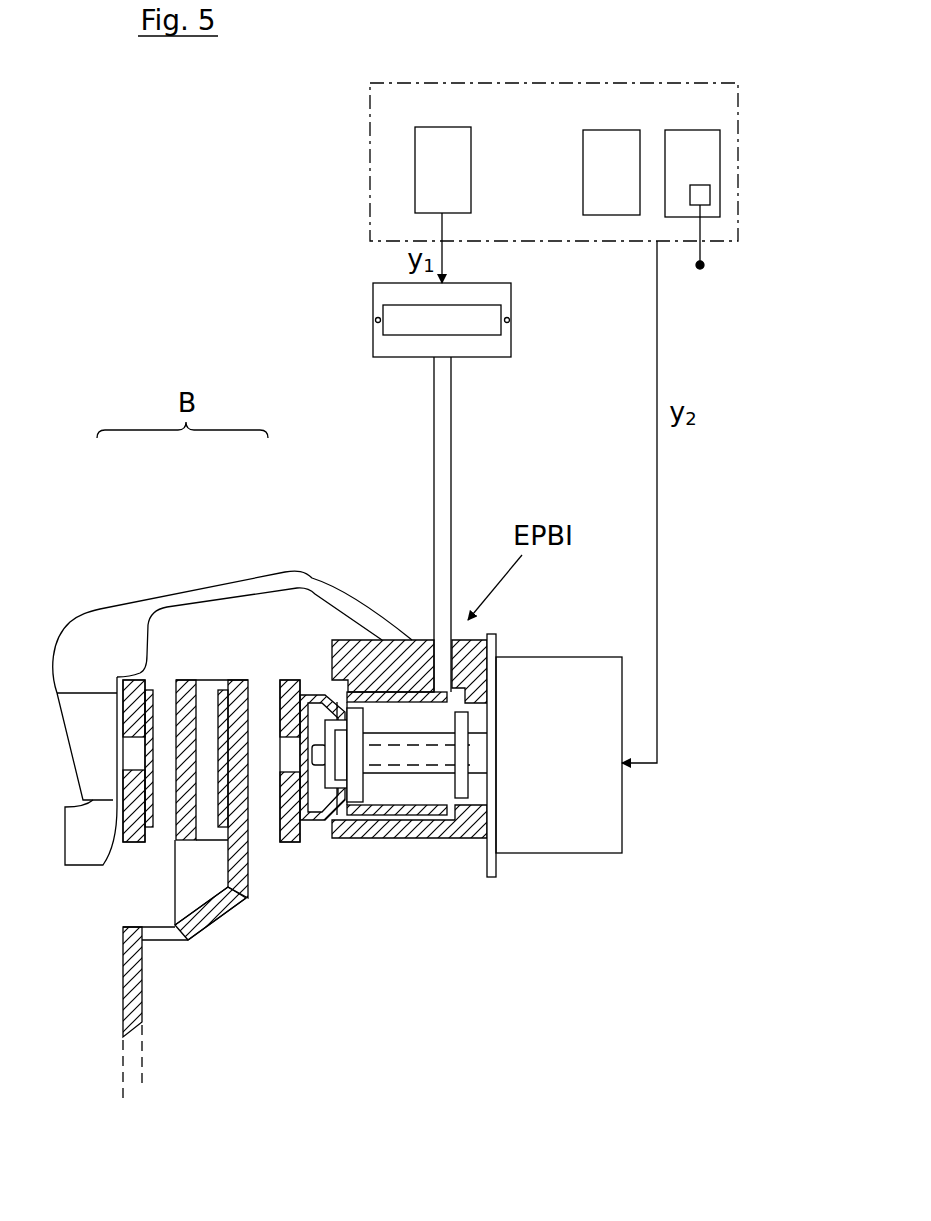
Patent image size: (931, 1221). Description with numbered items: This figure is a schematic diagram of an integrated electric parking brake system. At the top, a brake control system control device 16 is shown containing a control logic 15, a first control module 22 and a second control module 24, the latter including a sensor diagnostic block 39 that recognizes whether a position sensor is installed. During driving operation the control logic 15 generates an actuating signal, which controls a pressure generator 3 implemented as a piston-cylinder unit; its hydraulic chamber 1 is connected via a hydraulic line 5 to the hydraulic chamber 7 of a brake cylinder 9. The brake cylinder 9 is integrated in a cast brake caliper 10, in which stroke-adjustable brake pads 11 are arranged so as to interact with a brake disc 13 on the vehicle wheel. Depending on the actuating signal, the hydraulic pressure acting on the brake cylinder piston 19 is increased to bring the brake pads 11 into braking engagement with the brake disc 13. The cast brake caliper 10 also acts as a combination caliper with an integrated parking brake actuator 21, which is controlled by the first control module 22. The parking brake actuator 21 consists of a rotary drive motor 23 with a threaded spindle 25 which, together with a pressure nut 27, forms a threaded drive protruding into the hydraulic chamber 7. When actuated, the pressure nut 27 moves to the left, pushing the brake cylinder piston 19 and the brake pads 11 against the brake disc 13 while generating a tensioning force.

The hydraulic chamber 1 is at (400, 348).
The pressure generator 3 is at (387, 295).
The hydraulic line 5 is at (452, 398).
The hydraulic chamber 7 is at (400, 712).
The brake cylinder 9 is at (308, 443).
The cast brake caliper 10 is at (130, 610).
The brake pads 11 is at (288, 677).
The brake disc 13 is at (188, 677).
The control logic 15 is at (427, 177).
The brake control system control device 16 is at (740, 112).
The brake cylinder piston 19 is at (303, 677).
The parking brake actuator 21 is at (467, 825).
The first control module 22 is at (595, 179).
The rotary drive motor 23 is at (559, 801).
The second control module 24 is at (676, 172).
The threaded spindle 25 is at (400, 767).
The pressure nut 27 is at (440, 777).
The sensor diagnostic block 39 is at (711, 195).